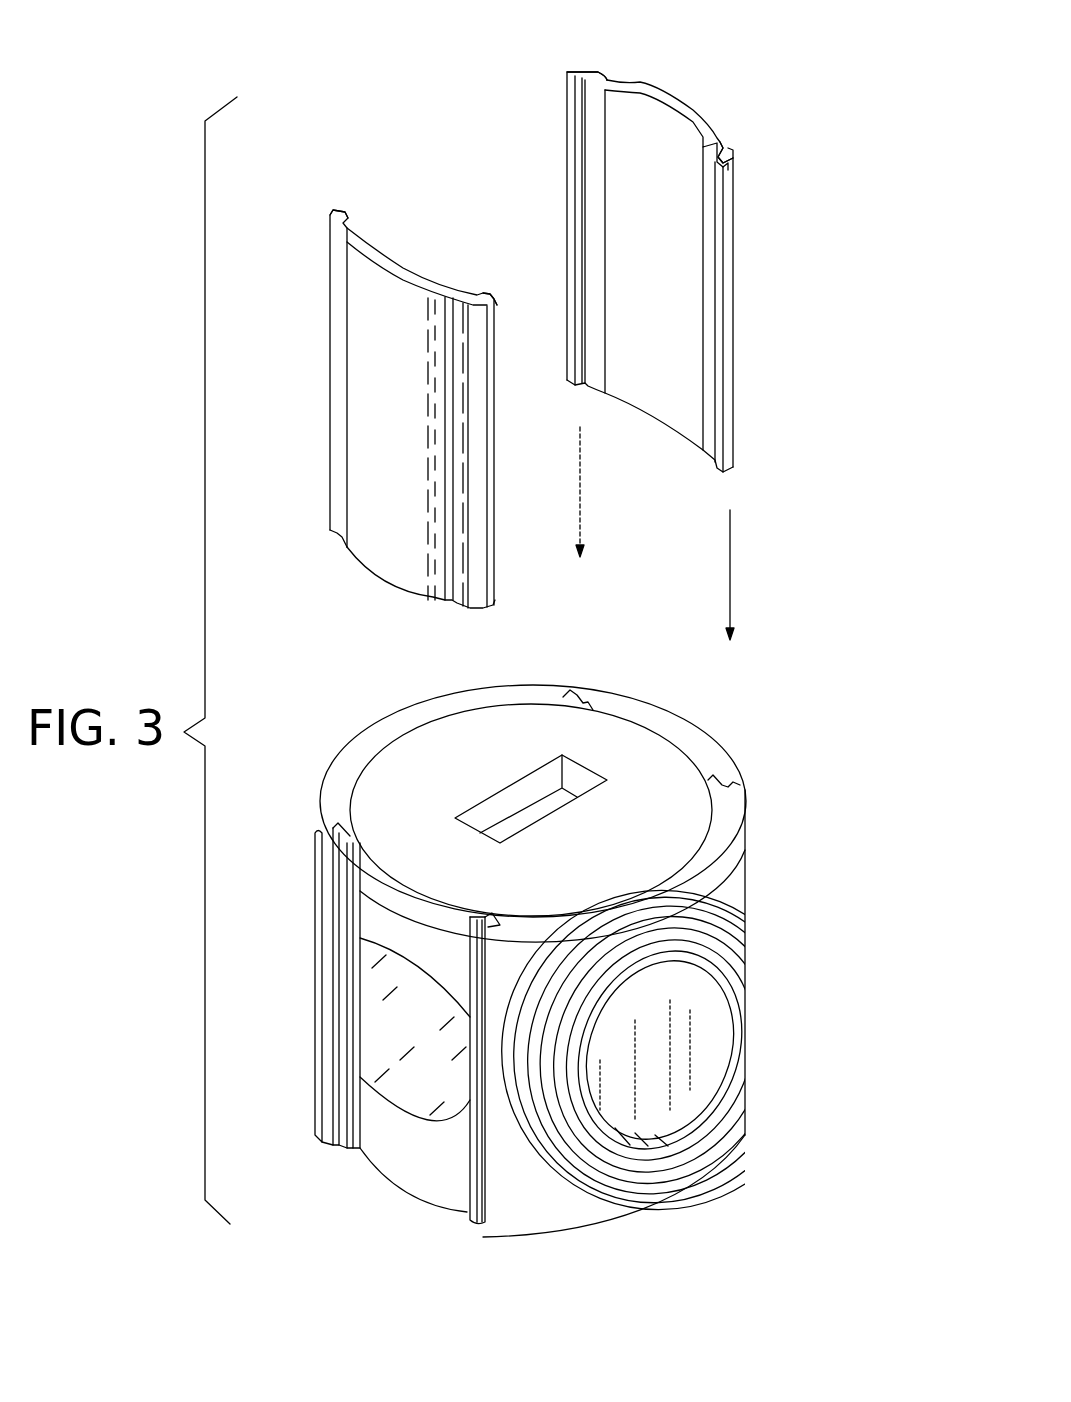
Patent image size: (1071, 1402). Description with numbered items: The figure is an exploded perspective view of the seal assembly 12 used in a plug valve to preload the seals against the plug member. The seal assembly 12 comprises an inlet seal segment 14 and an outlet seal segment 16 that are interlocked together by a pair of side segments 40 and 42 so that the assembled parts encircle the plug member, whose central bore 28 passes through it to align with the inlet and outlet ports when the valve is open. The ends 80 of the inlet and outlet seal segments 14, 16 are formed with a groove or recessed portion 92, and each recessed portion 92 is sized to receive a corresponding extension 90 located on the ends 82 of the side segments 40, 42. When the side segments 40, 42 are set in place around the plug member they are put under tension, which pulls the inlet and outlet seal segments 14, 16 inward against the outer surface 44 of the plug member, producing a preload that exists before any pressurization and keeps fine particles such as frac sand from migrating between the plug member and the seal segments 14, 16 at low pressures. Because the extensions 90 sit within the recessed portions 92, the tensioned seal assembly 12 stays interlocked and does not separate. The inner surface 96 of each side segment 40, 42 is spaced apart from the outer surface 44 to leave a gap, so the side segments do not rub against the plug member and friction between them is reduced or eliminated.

The seal assembly 12 is at (812, 407).
The inlet seal segment 14 is at (737, 867).
The outlet seal segment 16 is at (323, 780).
The central bore 28 is at (437, 1000).
The side segment 40 is at (690, 112).
The side segment 42 is at (383, 357).
The outer surface 44 is at (407, 923).
The ends 80 is at (500, 910).
The ends 82 is at (595, 62).
The extensions 90 is at (343, 217).
The recessed portion 92 is at (580, 695).
The inner surface 96 is at (397, 260).